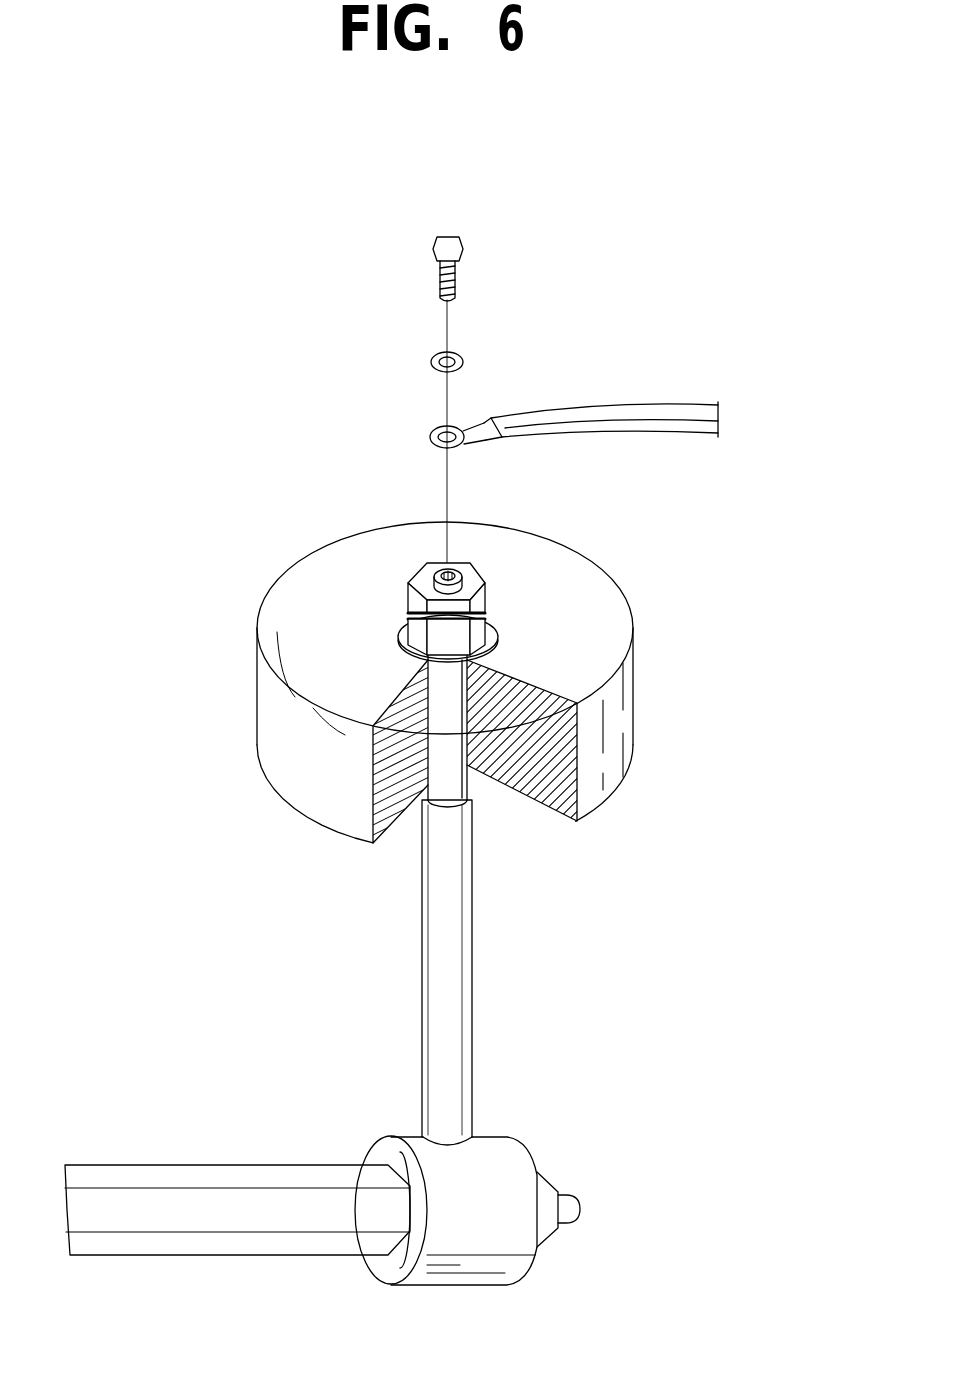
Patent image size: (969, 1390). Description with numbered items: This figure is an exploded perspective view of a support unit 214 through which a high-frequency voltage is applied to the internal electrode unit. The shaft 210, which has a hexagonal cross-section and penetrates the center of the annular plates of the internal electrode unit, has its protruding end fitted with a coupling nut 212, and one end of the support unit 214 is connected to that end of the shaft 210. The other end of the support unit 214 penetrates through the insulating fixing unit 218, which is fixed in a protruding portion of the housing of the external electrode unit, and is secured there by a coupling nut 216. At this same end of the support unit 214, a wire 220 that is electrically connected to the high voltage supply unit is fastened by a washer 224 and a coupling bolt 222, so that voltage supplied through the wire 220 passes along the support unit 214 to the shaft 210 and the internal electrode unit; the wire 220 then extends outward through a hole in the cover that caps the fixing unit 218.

The shaft 210 is at (258, 1200).
The coupling nut 212 is at (553, 1220).
The support unit 214 is at (453, 985).
The coupling nut 216 is at (470, 577).
The insulating fixing unit 218 is at (323, 605).
The wire 220 is at (638, 417).
The coupling bolt 222 is at (464, 256).
The washer 224 is at (430, 362).